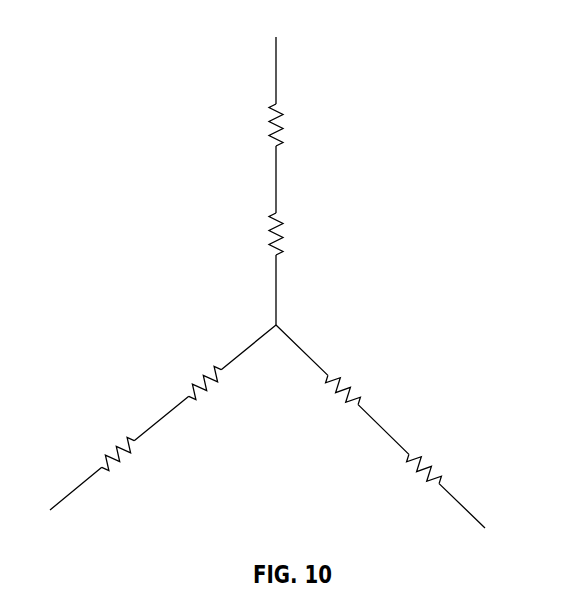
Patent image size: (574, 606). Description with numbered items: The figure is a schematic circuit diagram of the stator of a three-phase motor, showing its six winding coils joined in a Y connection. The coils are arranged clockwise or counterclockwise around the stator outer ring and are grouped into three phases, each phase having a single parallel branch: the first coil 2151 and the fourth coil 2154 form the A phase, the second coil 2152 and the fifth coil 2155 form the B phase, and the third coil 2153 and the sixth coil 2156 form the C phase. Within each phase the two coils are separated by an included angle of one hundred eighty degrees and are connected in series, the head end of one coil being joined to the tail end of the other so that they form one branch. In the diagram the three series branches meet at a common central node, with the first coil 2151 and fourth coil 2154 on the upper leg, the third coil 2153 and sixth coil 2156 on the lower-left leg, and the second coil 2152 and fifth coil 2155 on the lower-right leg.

The first coil 2151 is at (283, 105).
The second coil 2152 is at (420, 468).
The third coil 2153 is at (115, 453).
The fourth coil 2154 is at (282, 230).
The fifth coil 2155 is at (337, 382).
The sixth coil 2156 is at (210, 372).